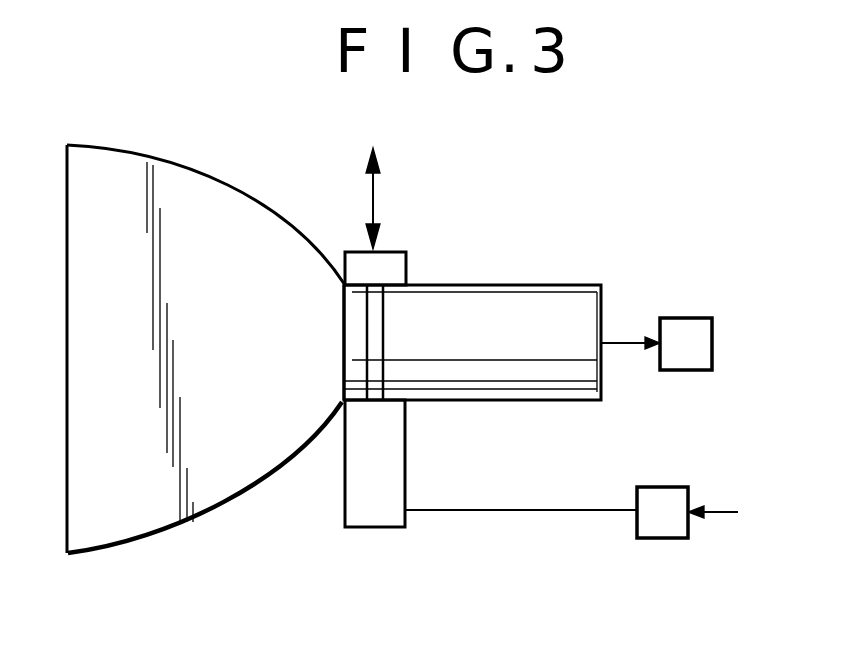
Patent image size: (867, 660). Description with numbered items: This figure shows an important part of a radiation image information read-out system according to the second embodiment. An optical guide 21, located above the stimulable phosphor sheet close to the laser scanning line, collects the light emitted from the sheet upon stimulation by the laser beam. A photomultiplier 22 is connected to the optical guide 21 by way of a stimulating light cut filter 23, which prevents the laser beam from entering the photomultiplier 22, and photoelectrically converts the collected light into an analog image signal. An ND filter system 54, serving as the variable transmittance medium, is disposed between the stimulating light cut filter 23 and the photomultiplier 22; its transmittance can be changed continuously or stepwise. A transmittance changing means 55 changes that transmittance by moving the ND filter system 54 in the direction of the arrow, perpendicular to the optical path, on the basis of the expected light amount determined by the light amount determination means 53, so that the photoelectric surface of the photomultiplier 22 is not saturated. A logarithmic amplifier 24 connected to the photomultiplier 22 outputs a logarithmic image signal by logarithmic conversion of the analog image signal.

The optical guide 21 is at (225, 207).
The photomultiplier 22 is at (538, 312).
The stimulating light cut filter 23 is at (347, 323).
The ND filter system 54 is at (384, 327).
The logarithmic amplifier 24 is at (683, 318).
The transmittance changing means 55 is at (369, 513).
The light amount determination means 53 is at (660, 540).